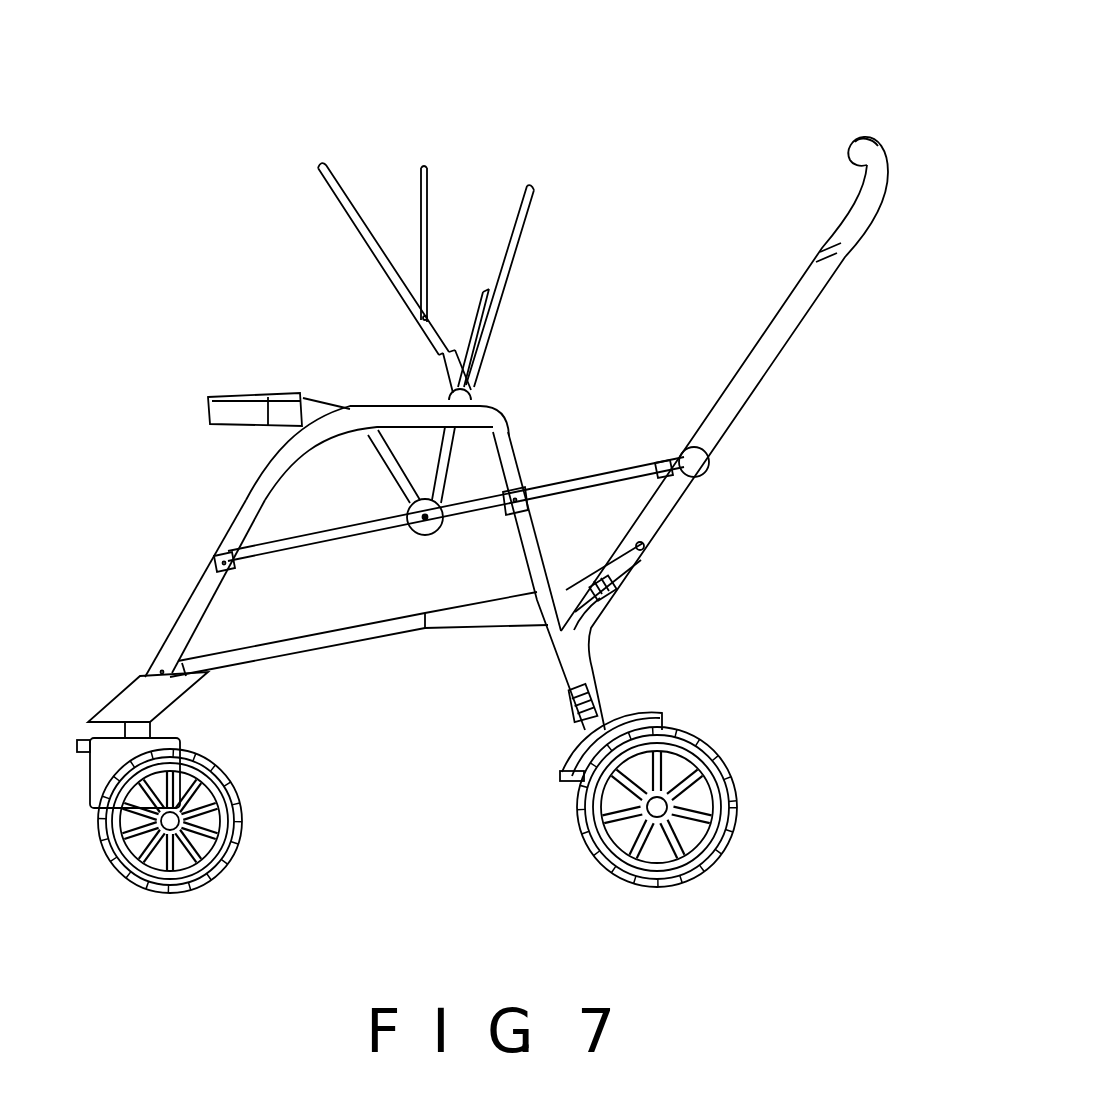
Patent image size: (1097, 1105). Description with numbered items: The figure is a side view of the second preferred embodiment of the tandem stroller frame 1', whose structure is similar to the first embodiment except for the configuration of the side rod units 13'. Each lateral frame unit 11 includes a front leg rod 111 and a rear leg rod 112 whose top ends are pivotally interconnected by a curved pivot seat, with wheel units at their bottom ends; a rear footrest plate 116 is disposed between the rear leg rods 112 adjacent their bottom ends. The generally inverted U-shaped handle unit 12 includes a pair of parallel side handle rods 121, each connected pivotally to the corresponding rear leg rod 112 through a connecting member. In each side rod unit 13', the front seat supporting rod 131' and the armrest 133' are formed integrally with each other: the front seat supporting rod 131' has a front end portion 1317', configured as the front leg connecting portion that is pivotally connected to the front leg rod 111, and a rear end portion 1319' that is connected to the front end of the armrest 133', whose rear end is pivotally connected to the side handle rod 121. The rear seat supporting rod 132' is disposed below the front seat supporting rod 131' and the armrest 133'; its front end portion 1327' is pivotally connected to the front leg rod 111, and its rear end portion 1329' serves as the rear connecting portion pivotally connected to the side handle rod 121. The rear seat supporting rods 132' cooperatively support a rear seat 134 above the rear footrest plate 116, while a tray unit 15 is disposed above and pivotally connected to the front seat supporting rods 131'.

The tandem stroller frame 1' is at (447, 280).
The lateral frame unit 11 is at (187, 568).
The front leg rod 111 is at (186, 633).
The rear leg rod 112 is at (537, 570).
The rear footrest plate 116 is at (560, 778).
The handle unit 12 is at (892, 140).
The side handle rod 121 is at (717, 423).
The side rod unit 13' is at (538, 390).
The front seat supporting rod 131' is at (367, 553).
The front end portion 1317' is at (247, 598).
The rear end portion 1319' is at (425, 548).
The rear seat supporting rod 132' is at (359, 663).
The front end portion 1327' is at (233, 700).
The rear end portion 1329' is at (699, 534).
The armrest 133' is at (593, 436).
The rear seat 134 is at (493, 615).
The tray unit 15 is at (237, 380).